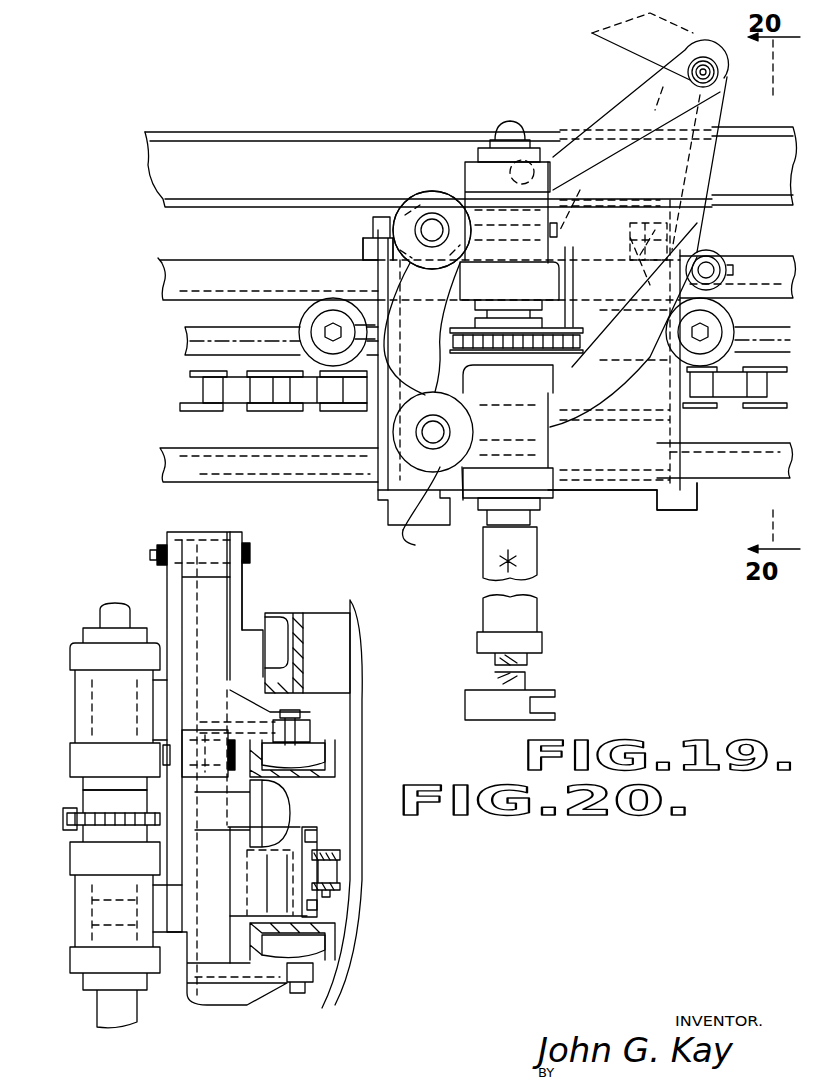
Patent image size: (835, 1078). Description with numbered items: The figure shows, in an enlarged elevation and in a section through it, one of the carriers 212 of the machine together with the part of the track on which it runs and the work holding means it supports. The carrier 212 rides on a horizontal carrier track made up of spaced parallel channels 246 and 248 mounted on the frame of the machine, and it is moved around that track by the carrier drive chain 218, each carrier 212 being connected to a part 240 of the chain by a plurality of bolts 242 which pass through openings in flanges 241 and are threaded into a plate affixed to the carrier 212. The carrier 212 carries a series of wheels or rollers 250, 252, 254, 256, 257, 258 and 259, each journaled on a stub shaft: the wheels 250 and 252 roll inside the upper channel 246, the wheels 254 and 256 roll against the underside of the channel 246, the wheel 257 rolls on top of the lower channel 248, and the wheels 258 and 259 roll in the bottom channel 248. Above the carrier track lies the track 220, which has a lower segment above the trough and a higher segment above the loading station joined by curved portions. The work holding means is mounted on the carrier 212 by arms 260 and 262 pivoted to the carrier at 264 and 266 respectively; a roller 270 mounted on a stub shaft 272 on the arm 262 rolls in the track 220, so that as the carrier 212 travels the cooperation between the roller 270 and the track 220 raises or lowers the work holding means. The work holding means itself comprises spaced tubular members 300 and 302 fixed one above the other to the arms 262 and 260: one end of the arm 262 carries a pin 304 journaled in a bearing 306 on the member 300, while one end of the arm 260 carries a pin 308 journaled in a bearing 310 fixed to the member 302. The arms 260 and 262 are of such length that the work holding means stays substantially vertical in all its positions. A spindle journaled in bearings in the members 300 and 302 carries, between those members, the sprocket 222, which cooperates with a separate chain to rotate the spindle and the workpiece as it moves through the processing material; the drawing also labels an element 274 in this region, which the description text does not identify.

In FIG. 19, the carrier 212 is at (637, 497).
In FIG. 20, the carrier 212 is at (229, 1008).
In FIG. 19, the carrier drive chain 218 is at (200, 391).
In FIG. 19, the track 220 is at (292, 150).
In FIG. 20, the track 220 is at (305, 660).
In FIG. 20, the sprocket 222 is at (110, 826).
In FIG. 20, the part of the chain 240 is at (337, 858).
In FIG. 20, the flanges 241 is at (320, 907).
In FIG. 20, the bolts 242 is at (317, 837).
In FIG. 19, the upper channel 246 is at (165, 270).
In FIG. 20, the upper channel 246 is at (330, 762).
In FIG. 19, the lower channel 248 is at (175, 462).
In FIG. 20, the lower channel 248 is at (320, 953).
In FIG. 19, the wheel 250 is at (307, 255).
In FIG. 19, the wheel 252 is at (635, 244).
In FIG. 20, the wheel 252 is at (313, 750).
In FIG. 19, the wheel 254 is at (312, 320).
In FIG. 19, the wheel 256 is at (723, 322).
In FIG. 20, the wheel 256 is at (287, 808).
In FIG. 19, the wheel 257 is at (567, 460).
In FIG. 20, the wheel 257 is at (287, 917).
In FIG. 19, the wheel 258 is at (355, 455).
In FIG. 19, the wheel 259 is at (705, 482).
In FIG. 20, the wheel 259 is at (322, 1008).
In FIG. 19, the arm 260 is at (640, 307).
In FIG. 19, the arm 262 is at (633, 92).
In FIG. 20, the arm 262 is at (240, 586).
In FIG. 19, the pivot 264 is at (718, 262).
In FIG. 19, the pivot 266 is at (704, 66).
In FIG. 19, the roller 270 is at (530, 143).
In FIG. 20, the roller 270 is at (282, 637).
In FIG. 20, the stub shaft 272 is at (265, 640).
In FIG. 19, the sprocket 274 is at (520, 287).
In FIG. 19, the tubular member 300 is at (520, 239).
In FIG. 19, the tubular member 302 is at (547, 493).
In FIG. 19, the pin 304 is at (432, 222).
In FIG. 19, the bearing 306 is at (418, 199).
In FIG. 19, the pin 308 is at (420, 431).
In FIG. 19, the bearing 310 is at (429, 543).